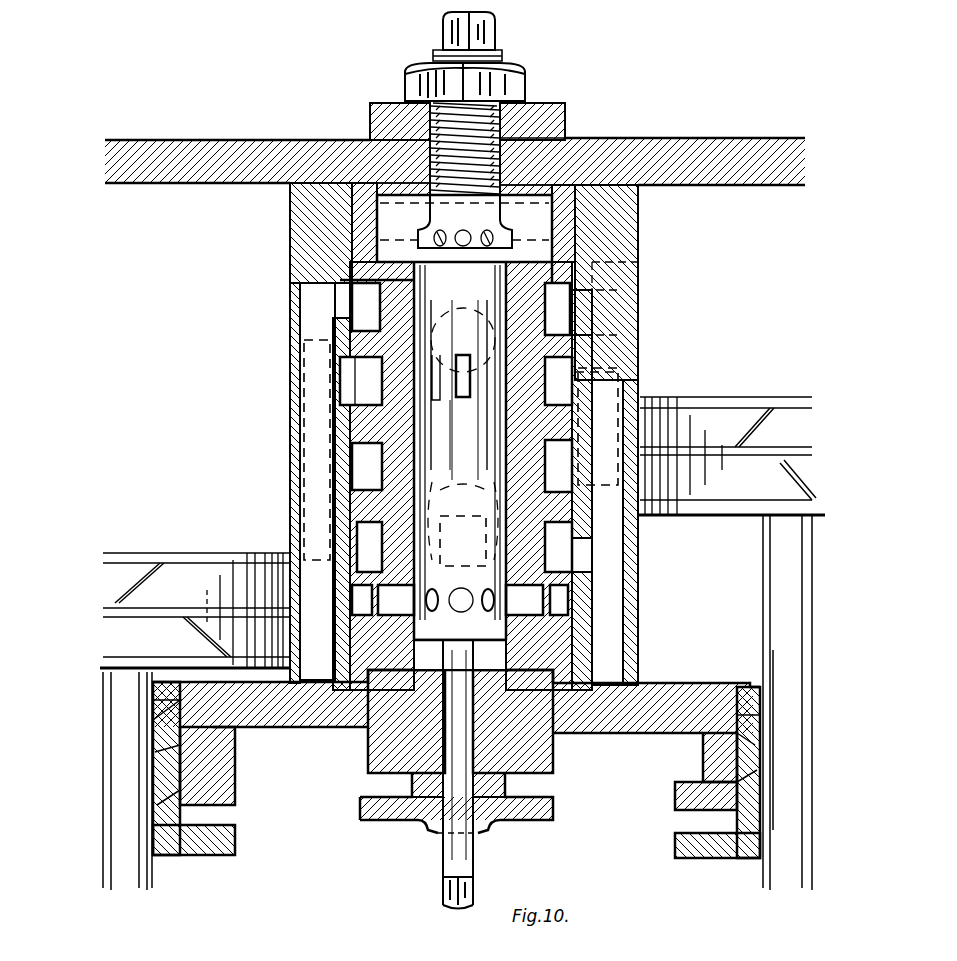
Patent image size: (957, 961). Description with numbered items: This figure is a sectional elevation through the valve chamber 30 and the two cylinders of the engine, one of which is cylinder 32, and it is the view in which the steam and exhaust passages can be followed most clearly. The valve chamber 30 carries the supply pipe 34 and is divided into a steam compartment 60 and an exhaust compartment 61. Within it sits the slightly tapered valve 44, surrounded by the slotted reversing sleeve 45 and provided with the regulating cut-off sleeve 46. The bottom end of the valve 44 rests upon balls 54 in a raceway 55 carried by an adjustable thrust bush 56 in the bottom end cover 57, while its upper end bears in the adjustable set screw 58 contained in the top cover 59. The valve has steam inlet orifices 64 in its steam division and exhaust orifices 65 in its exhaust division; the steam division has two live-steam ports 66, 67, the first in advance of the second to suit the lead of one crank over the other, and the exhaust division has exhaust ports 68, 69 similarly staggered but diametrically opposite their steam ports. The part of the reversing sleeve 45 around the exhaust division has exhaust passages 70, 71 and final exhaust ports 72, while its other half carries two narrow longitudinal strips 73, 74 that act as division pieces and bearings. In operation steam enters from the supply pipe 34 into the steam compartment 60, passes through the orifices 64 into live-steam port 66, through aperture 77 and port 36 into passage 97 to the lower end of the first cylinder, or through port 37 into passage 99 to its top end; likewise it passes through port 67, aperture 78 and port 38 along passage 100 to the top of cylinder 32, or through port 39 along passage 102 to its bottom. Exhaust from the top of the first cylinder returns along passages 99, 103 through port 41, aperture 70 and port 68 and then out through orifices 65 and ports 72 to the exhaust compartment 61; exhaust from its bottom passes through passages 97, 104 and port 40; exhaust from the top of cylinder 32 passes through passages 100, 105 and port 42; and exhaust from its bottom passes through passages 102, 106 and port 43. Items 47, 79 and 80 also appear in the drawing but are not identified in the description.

The valve chamber 30 is at (362, 140).
The cylinder 32 is at (731, 428).
The supply pipe 34 is at (463, 340).
The live-steam port 36 is at (366, 307).
The live-steam port 37 is at (655, 328).
The live-steam port 38 is at (361, 381).
The live-steam port 39 is at (558, 381).
The exhaust port 40 is at (367, 466).
The exhaust port 41 is at (558, 466).
The exhaust port 42 is at (369, 547).
The exhaust port 43 is at (558, 547).
The valve 44 is at (462, 435).
The reversing sleeve 45 is at (418, 490).
The cut-off sleeve 46 is at (505, 262).
The shaft 47 is at (452, 857).
The balls 54 is at (435, 644).
The raceway 55 is at (481, 644).
The thrust bush 56 is at (415, 822).
The bottom end cover 57 is at (368, 748).
The set screw 58 is at (500, 55).
The top cover 59 is at (566, 115).
The steam compartment 60 is at (464, 228).
The exhaust compartment 61 is at (352, 597).
The steam inlet orifices 64 is at (497, 229).
The exhaust orifices 65 is at (450, 592).
The live-steam port 66 is at (426, 302).
The live-steam port 67 is at (456, 393).
The exhaust port 68 is at (471, 390).
The exhaust port 69 is at (443, 531).
The exhaust passage 70 is at (420, 440).
The exhaust passage 71 is at (463, 541).
The final exhaust ports 72 is at (460, 600).
The longitudinal strip 73 is at (418, 336).
The longitudinal strip 74 is at (505, 280).
The aperture 77 is at (424, 284).
The aperture 78 is at (500, 336).
The pin 79 is at (396, 256).
The pin 80 is at (555, 262).
The passage 97 is at (326, 481).
The passage 99 is at (312, 193).
The passage 100 is at (640, 205).
The passage 102 is at (604, 526).
The passage 103 is at (615, 388).
The passage 104 is at (340, 466).
The passage 105 is at (335, 410).
The passage 106 is at (585, 552).